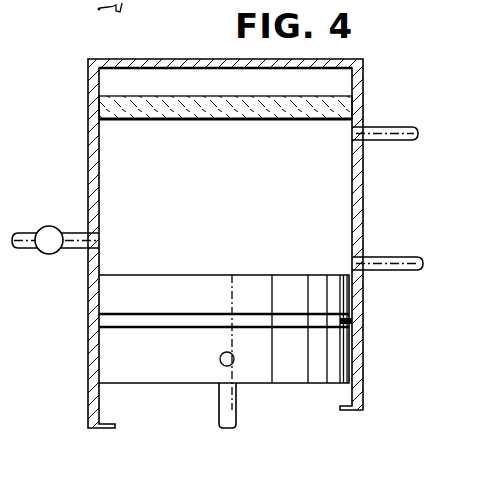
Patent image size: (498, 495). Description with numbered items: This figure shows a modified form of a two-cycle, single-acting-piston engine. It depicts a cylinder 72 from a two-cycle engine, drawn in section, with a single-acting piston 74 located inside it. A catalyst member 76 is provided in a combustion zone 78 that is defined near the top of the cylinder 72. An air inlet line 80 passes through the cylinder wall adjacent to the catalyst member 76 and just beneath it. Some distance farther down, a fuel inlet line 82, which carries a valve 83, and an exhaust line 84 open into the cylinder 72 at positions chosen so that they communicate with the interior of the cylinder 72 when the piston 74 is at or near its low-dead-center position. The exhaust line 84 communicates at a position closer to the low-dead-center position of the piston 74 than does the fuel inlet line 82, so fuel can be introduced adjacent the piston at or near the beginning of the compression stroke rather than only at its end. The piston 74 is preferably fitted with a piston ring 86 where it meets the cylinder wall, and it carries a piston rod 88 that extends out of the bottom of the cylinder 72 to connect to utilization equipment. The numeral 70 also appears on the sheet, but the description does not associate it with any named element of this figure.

The adjacent apparatus 70 is at (2, 10).
The cylinder 72 is at (88, 183).
The single-acting piston 74 is at (331, 298).
The catalyst member 76 is at (333, 108).
The combustion zone 78 is at (224, 92).
The air inlet line 80 is at (404, 128).
The fuel inlet line 82 is at (23, 251).
The valve 83 is at (51, 226).
The exhaust line 84 is at (390, 262).
The piston ring 86 is at (357, 325).
The piston rod 88 is at (237, 398).